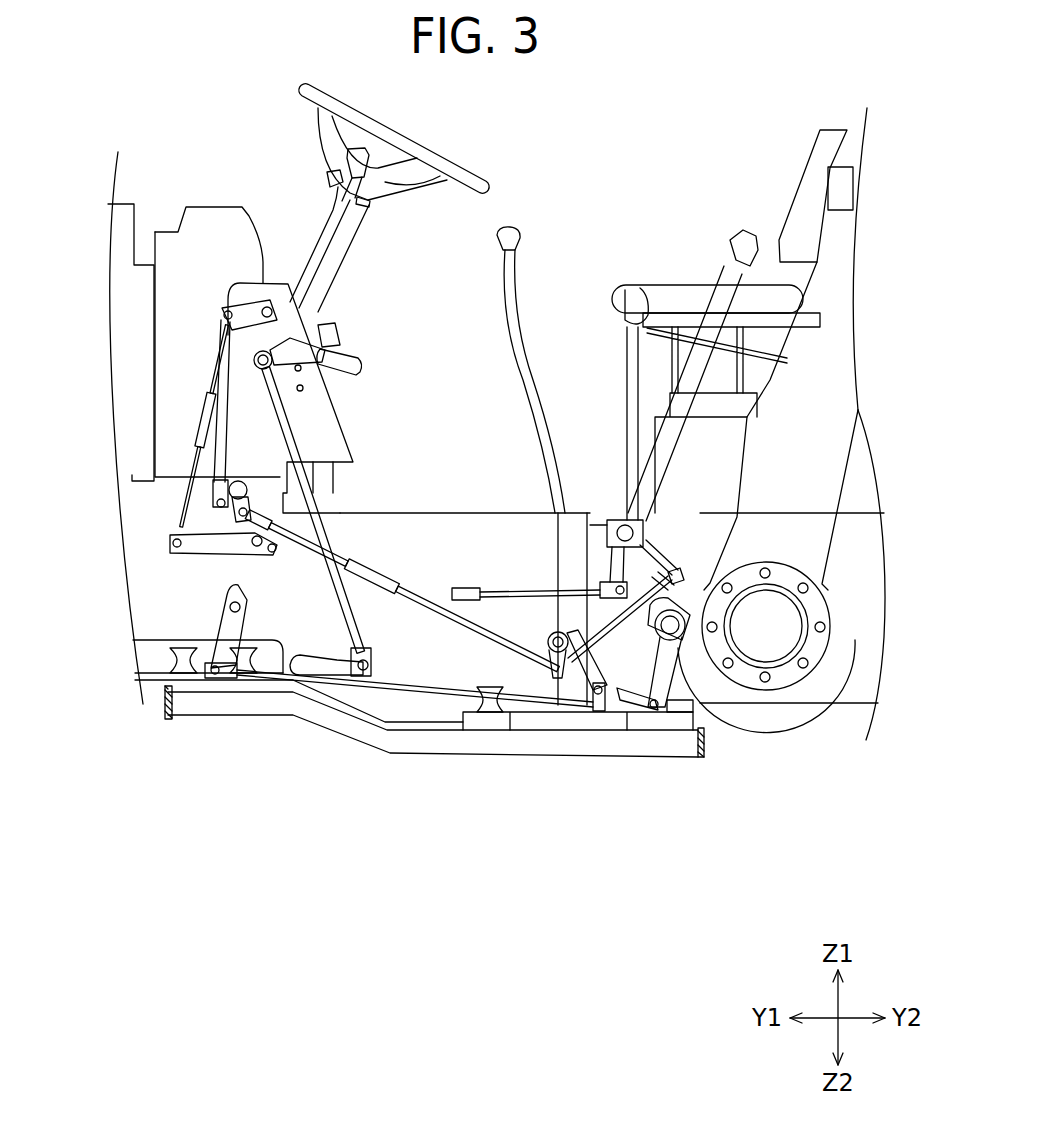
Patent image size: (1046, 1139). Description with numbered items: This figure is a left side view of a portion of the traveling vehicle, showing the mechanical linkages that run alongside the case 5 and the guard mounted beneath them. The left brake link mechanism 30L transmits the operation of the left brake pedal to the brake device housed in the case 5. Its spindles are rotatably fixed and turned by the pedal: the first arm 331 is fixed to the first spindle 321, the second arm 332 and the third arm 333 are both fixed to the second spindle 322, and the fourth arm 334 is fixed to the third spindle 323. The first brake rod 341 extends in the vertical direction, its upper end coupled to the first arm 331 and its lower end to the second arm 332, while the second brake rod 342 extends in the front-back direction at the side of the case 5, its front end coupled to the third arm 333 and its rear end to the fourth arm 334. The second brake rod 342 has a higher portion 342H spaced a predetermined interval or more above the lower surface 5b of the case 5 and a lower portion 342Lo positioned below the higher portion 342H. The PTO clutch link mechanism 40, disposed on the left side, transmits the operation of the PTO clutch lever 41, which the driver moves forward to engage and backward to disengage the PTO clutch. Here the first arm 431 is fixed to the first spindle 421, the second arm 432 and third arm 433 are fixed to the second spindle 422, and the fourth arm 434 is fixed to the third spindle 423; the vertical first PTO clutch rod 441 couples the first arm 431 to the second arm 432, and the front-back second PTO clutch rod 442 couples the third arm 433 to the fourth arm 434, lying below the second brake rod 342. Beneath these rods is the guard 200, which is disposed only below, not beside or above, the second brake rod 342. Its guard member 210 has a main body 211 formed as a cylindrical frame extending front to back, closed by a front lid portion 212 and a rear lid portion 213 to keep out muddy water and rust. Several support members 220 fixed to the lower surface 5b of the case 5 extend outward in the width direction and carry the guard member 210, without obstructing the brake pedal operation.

The case 5 is at (427, 532).
The lower surface of the case 5b is at (520, 715).
The left brake link mechanism 30L is at (425, 582).
The PTO clutch link mechanism 40 is at (360, 697).
The PTO clutch lever 41 is at (727, 285).
The guard 200 is at (474, 815).
The guard member 210 is at (372, 743).
The main body 211 is at (238, 707).
The front lid portion 212 is at (163, 687).
The rear lid portion 213 is at (706, 740).
The support member 220 is at (173, 682).
The first spindle 321 is at (305, 305).
The second spindle 322 is at (212, 447).
The third spindle 323 is at (680, 612).
The first arm 331 is at (245, 313).
The second arm 332 is at (210, 525).
The third arm 333 is at (283, 452).
The fourth arm 334 is at (680, 657).
The first brake rod 341 is at (240, 347).
The second brake rod 342 is at (395, 598).
The higher portion 342H is at (287, 513).
The lower portion 342Lo is at (653, 717).
The first spindle 421 is at (610, 517).
The second spindle 422 is at (556, 510).
The third spindle 423 is at (228, 605).
The first arm 431 is at (660, 590).
The second arm 432 is at (553, 713).
The third arm 433 is at (617, 717).
The fourth arm 434 is at (198, 680).
The first PTO clutch rod 441 is at (680, 600).
The second PTO clutch rod 442 is at (337, 683).